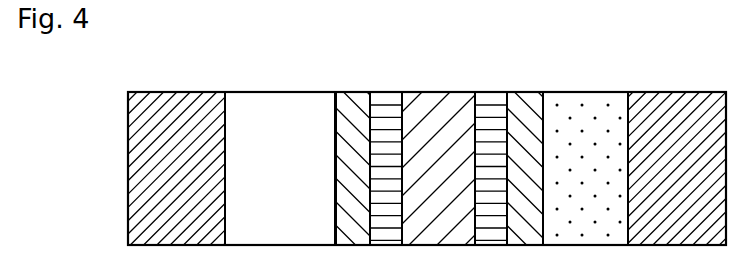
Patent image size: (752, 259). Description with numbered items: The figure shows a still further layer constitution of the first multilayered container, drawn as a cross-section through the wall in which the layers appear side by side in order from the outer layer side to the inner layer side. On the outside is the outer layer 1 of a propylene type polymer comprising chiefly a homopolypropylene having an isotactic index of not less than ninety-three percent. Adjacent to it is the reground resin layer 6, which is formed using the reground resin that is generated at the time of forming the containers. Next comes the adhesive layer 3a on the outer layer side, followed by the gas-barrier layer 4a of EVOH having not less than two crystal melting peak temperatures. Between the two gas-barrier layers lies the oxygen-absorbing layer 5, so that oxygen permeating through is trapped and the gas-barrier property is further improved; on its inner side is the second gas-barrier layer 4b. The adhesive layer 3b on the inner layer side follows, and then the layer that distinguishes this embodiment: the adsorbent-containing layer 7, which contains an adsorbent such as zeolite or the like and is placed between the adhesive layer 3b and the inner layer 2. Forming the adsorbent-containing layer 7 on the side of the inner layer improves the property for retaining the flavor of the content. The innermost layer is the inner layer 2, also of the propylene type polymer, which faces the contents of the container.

The outer layer 1 is at (180, 104).
The reground resin layer 6 is at (282, 107).
The adhesive layer on the outer layer side 3a is at (356, 105).
The gas-barrier layer 4a is at (390, 105).
The oxygen-absorbing layer 5 is at (443, 105).
The gas-barrier layer 4b is at (492, 105).
The adhesive layer on the inner layer side 3b is at (526, 105).
The adsorbent-containing layer 7 is at (584, 105).
The inner layer 2 is at (677, 105).